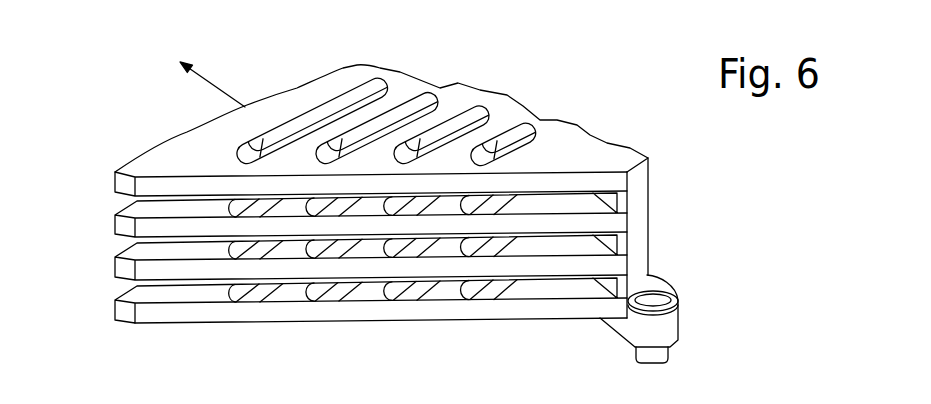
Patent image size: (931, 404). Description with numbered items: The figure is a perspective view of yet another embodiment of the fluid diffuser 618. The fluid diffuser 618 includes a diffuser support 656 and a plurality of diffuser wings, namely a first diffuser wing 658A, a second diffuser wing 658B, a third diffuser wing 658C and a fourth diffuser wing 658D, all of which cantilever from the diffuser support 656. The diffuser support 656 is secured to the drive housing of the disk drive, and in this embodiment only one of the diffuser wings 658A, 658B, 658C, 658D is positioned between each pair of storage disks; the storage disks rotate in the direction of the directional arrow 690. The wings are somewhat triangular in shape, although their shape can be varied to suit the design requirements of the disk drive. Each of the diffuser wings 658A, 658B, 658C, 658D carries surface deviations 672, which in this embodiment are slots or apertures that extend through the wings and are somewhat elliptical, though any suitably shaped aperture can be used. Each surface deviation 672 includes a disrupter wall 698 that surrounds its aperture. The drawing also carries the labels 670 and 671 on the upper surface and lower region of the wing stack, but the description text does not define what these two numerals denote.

The first diffuser wing 658A is at (347, 125).
The second diffuser wing 658B is at (130, 228).
The third diffuser wing 658C is at (130, 271).
The fourth diffuser wing 658D is at (326, 330).
The directional arrow 690 is at (219, 89).
The disrupter wall 698 is at (505, 138).
The surface deviation 672 is at (527, 132).
The top surface 670 is at (612, 160).
The diffuser support 656 is at (636, 207).
The fluid diffuser 618 is at (694, 256).
The bottom surface 671 is at (364, 328).